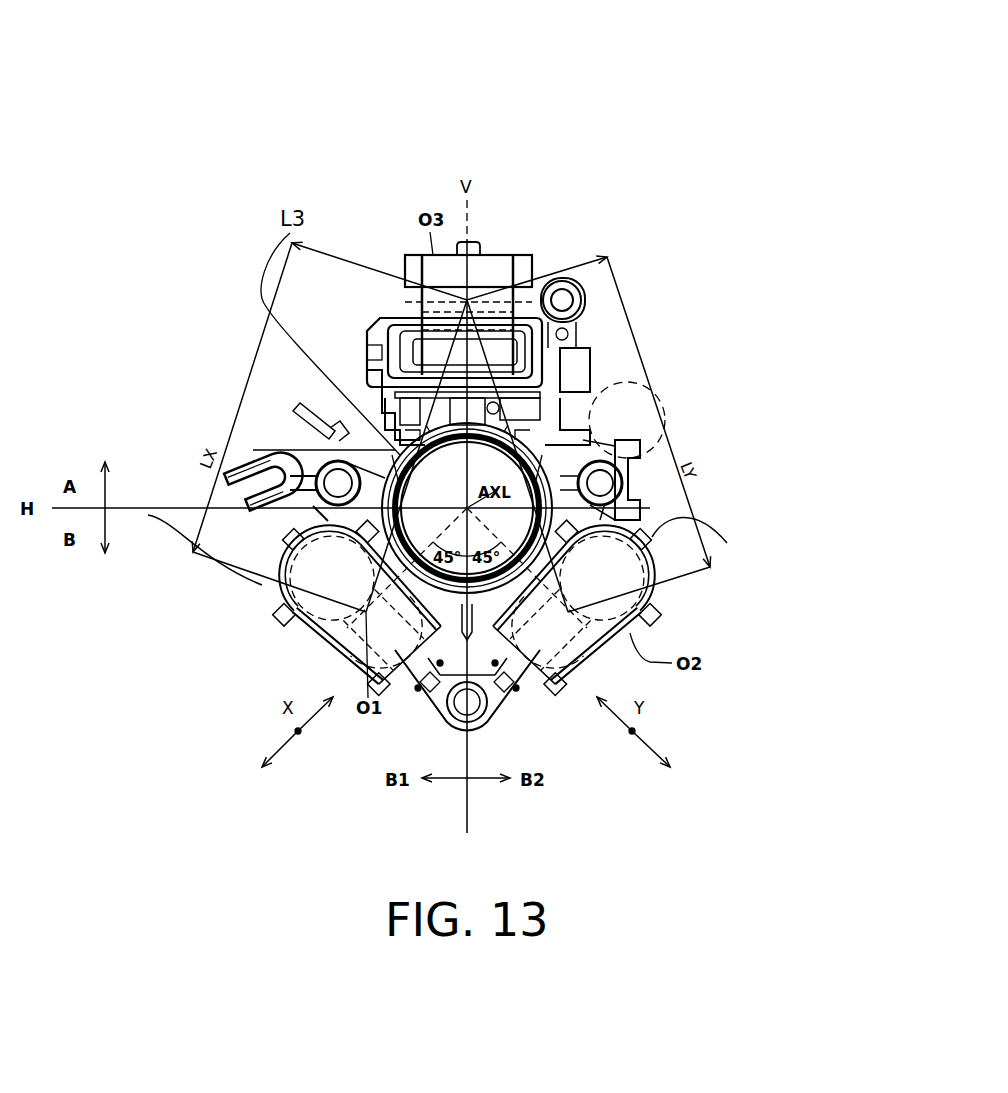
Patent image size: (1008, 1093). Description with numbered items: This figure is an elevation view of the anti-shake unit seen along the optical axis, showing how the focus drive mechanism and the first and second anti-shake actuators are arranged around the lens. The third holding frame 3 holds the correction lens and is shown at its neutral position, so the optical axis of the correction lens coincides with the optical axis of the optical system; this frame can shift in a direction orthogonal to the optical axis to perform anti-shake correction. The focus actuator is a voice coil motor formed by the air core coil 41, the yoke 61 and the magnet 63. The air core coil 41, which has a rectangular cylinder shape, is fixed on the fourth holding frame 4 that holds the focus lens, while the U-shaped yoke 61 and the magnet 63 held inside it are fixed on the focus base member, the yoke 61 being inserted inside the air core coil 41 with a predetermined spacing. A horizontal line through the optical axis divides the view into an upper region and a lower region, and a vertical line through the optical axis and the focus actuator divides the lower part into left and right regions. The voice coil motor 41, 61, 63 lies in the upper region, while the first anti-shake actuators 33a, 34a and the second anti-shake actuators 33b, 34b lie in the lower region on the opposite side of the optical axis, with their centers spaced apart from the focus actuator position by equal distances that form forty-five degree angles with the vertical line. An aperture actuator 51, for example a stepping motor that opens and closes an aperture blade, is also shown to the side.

The yoke 61 is at (486, 258).
The magnet 63 is at (560, 258).
The air core coil 41 is at (645, 258).
The fourth holding frame 4 is at (353, 453).
The third holding frame 3 is at (578, 475).
The aperture actuator 51 is at (638, 422).
The first anti-shake actuator 33a is at (305, 615).
The second anti-shake actuator 33b is at (655, 575).
The first anti-shake actuator 34a is at (292, 583).
The second anti-shake actuator 34b is at (660, 607).